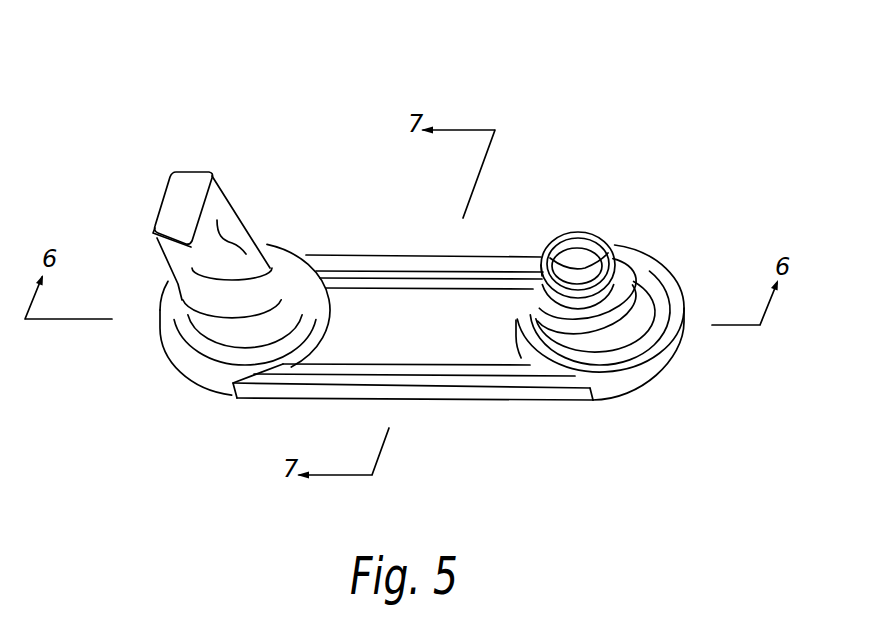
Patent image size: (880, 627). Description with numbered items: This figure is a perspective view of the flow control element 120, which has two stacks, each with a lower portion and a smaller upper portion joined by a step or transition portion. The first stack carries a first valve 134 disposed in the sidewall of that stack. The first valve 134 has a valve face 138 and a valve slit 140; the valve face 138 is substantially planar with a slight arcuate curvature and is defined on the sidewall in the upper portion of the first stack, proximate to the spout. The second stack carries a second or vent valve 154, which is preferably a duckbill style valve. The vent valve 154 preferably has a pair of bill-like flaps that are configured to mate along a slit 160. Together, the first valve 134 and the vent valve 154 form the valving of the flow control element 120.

The flow control element 120 is at (705, 97).
The first valve 134 is at (262, 190).
The valve face 138 is at (242, 227).
The valve slit 140 is at (180, 300).
The vent valve 154 is at (616, 212).
The slit 160 is at (548, 297).